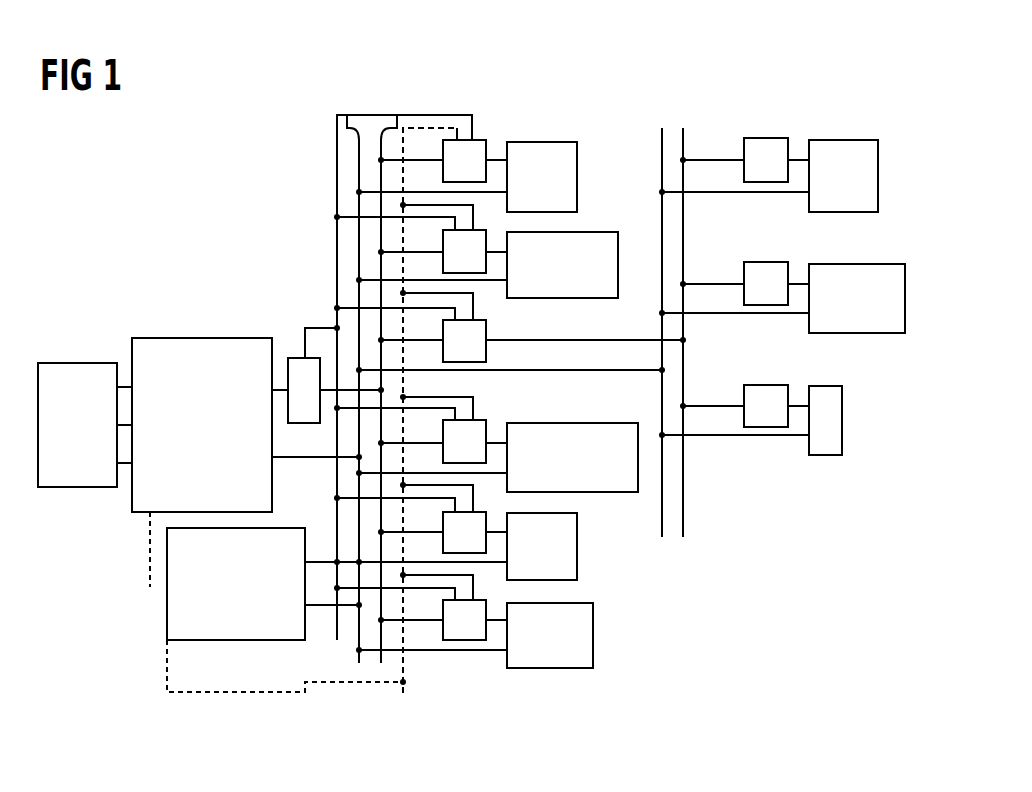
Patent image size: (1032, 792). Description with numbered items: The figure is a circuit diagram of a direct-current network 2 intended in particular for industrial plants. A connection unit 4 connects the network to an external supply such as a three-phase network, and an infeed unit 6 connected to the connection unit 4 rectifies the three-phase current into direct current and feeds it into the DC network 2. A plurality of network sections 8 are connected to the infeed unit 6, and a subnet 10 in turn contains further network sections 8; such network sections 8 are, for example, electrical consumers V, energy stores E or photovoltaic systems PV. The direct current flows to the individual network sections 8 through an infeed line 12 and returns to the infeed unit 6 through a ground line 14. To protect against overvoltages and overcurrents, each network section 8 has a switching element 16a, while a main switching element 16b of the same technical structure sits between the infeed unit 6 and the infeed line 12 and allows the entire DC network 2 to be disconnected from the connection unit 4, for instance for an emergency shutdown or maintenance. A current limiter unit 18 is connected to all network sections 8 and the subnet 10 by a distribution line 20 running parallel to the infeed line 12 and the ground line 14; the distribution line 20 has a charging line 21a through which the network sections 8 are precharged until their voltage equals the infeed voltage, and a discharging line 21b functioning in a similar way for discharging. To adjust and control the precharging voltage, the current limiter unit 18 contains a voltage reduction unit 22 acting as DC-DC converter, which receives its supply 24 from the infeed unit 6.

The direct-current network 2 is at (178, 186).
The connection unit 4 is at (78, 363).
The infeed unit 6 is at (205, 338).
The network section 8 is at (706, 406).
The subnet 10 is at (803, 486).
The infeed line 12 is at (397, 114).
The ground line 14 is at (347, 114).
The switching element 16a is at (480, 140).
The main switching element 16b is at (298, 358).
The current limiter unit 18 is at (152, 639).
The distribution line 20 is at (342, 377).
The charging line 21a is at (337, 128).
The discharging line 21b is at (406, 668).
The voltage reduction unit 22 is at (167, 612).
The supply 24 is at (150, 552).
The electrical consumer V is at (540, 142).
The energy store E is at (638, 455).
The photovoltaic system PV is at (593, 637).